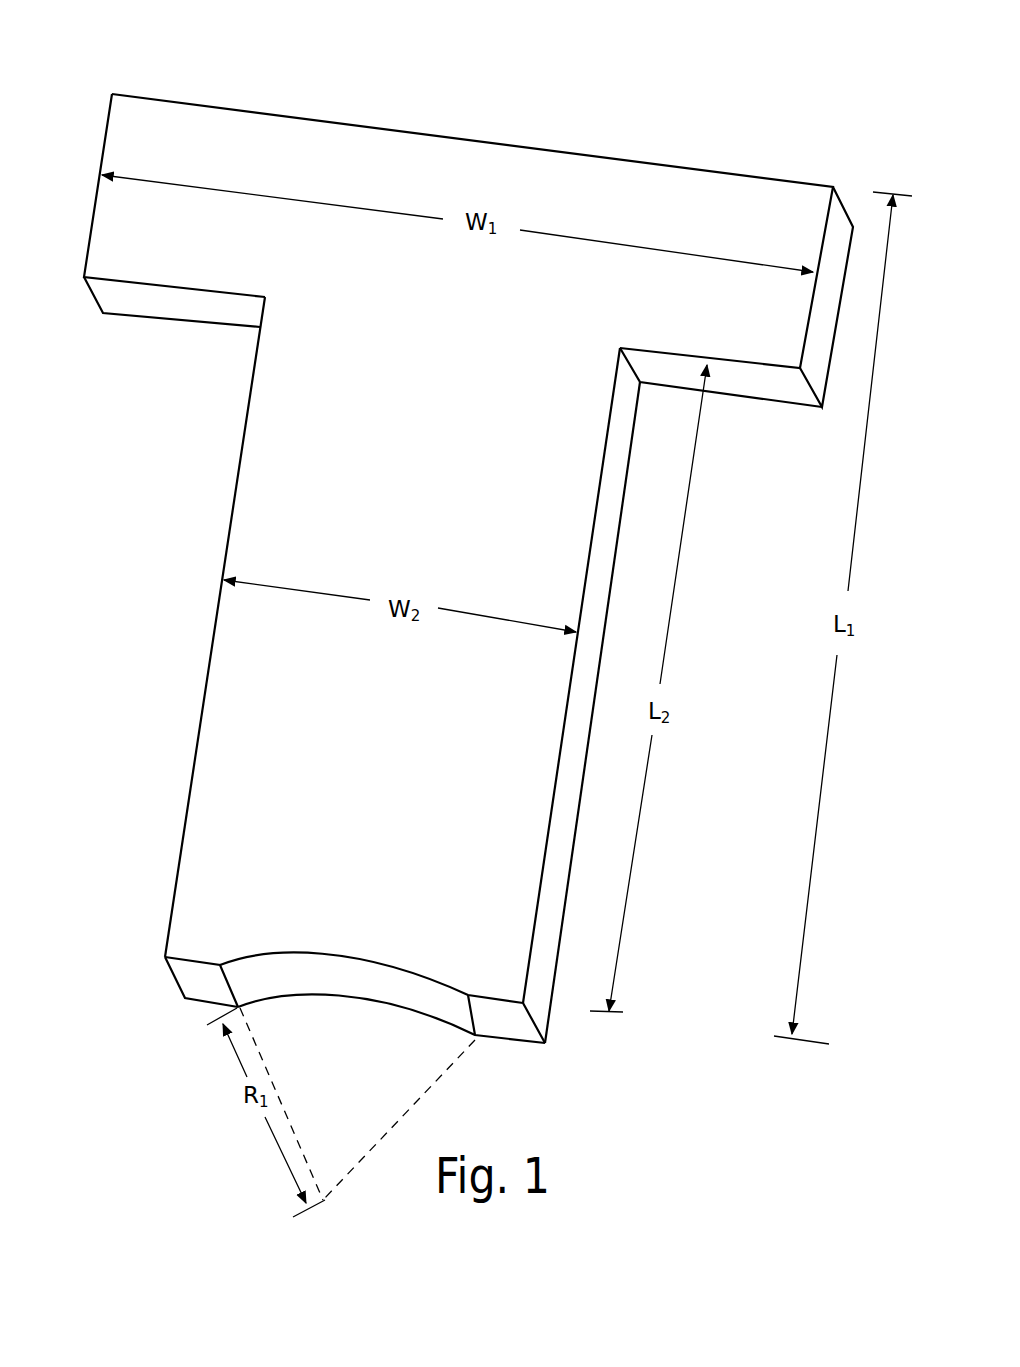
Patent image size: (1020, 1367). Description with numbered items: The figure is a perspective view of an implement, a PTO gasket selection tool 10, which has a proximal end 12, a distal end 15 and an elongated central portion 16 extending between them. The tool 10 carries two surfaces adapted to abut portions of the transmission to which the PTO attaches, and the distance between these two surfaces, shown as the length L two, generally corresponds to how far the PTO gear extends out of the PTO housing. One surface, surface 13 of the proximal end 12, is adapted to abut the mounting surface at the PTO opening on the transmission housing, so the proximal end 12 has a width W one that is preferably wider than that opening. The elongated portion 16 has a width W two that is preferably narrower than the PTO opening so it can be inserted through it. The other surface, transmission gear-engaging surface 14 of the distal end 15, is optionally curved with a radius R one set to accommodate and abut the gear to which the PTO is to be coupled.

The PTO gasket selection tool 10 is at (804, 101).
The proximal end 12 is at (170, 146).
The surface 13 is at (187, 303).
The transmission gear-engaging surface 14 is at (211, 973).
The distal end 15 is at (153, 933).
The elongated central portion 16 is at (293, 540).